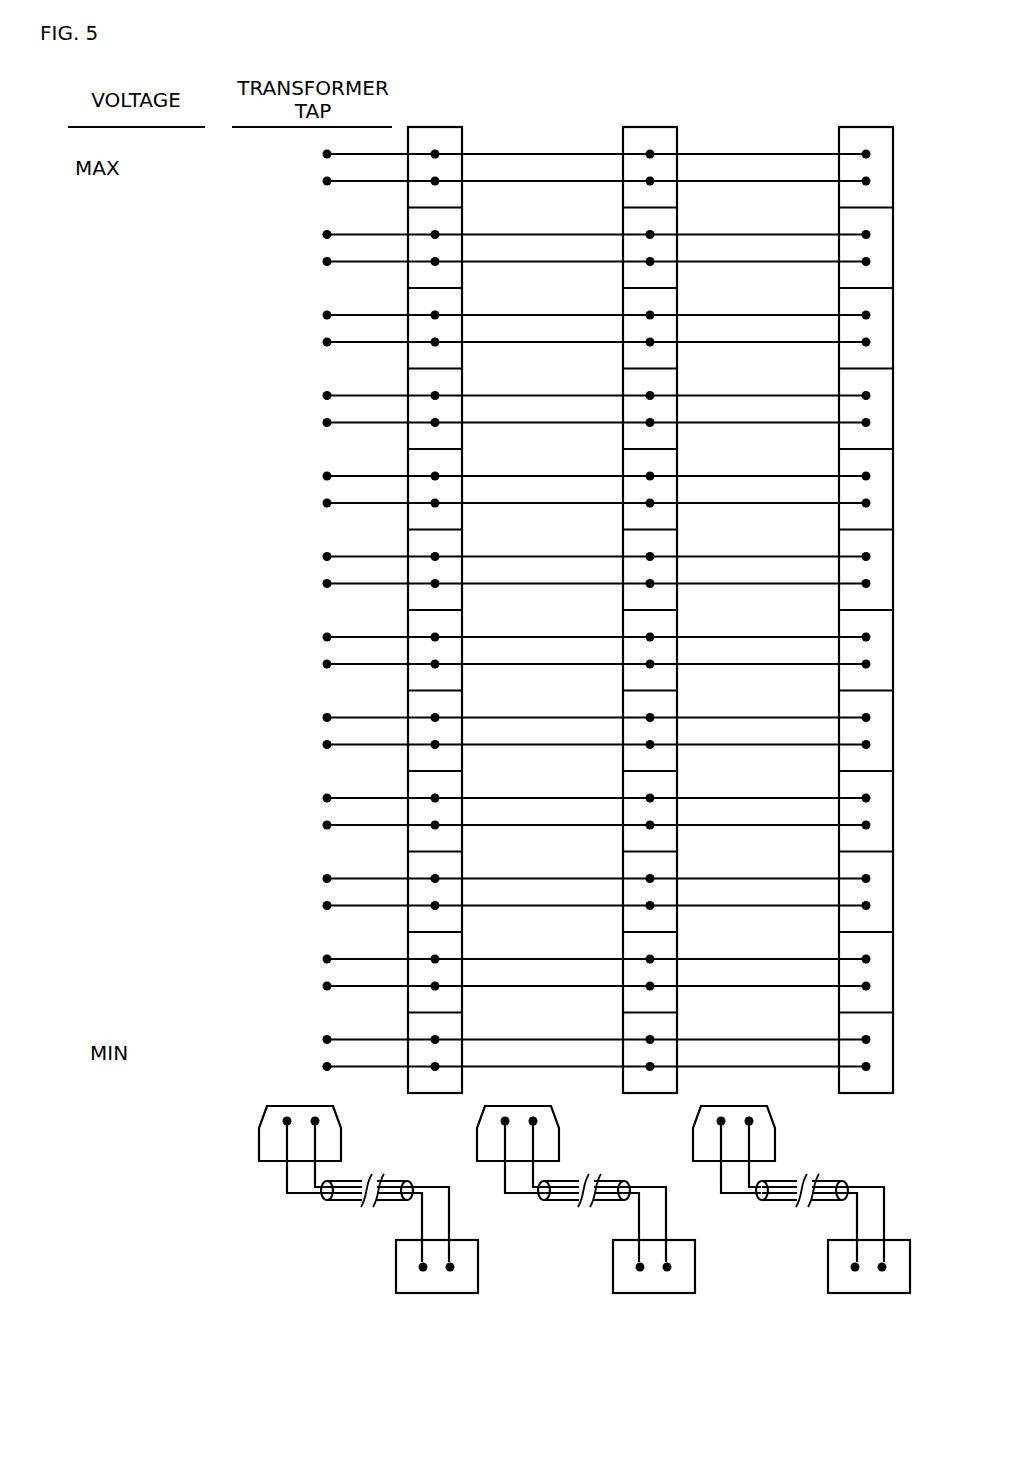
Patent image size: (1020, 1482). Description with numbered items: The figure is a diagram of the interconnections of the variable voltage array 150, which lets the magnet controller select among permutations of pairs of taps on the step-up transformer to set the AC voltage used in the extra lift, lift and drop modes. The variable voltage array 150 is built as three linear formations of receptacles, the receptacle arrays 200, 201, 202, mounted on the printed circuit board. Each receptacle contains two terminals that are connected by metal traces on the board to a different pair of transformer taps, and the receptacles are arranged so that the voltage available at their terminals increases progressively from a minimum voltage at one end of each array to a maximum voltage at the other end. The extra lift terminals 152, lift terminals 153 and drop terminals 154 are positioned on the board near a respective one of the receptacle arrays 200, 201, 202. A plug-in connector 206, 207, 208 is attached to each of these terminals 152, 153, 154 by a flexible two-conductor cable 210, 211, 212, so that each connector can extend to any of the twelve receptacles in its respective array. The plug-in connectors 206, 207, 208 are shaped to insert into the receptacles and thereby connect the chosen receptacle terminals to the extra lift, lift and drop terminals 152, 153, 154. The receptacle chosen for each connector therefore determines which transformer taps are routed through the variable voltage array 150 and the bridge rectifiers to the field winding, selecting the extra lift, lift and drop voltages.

The variable voltage array 150 is at (481, 58).
The receptacle array 200 is at (462, 134).
The receptacle array 201 is at (677, 134).
The receptacle array 202 is at (839, 134).
The plug-in connector 206 is at (259, 1140).
The plug-in connector 207 is at (477, 1140).
The plug-in connector 208 is at (693, 1140).
The two-conductor cable 210 is at (337, 1201).
The two-conductor cable 211 is at (554, 1201).
The two-conductor cable 212 is at (771, 1201).
The extra lift terminals 152 is at (396, 1281).
The lift terminals 153 is at (612, 1282).
The drop terminals 154 is at (828, 1282).